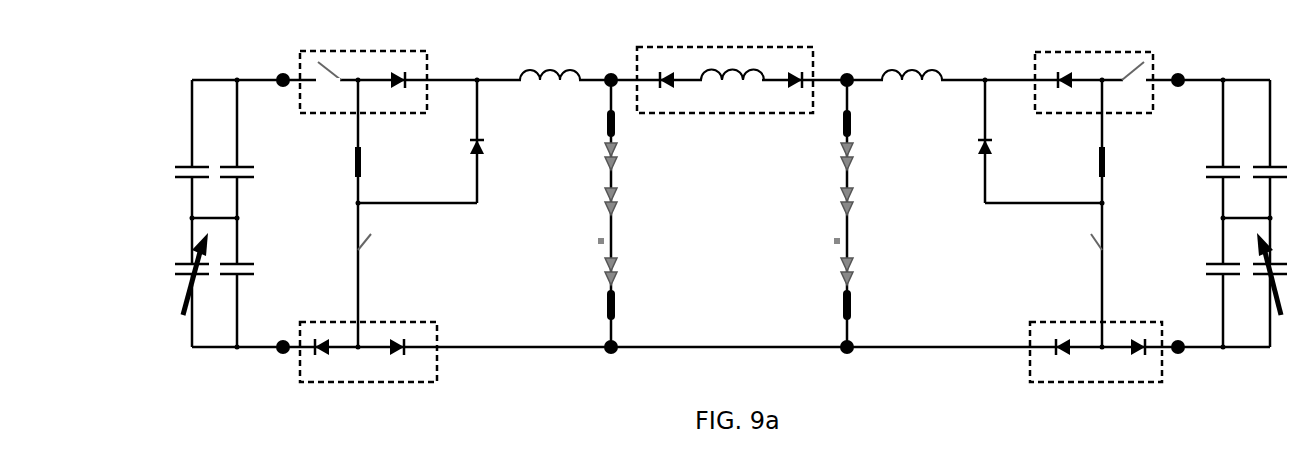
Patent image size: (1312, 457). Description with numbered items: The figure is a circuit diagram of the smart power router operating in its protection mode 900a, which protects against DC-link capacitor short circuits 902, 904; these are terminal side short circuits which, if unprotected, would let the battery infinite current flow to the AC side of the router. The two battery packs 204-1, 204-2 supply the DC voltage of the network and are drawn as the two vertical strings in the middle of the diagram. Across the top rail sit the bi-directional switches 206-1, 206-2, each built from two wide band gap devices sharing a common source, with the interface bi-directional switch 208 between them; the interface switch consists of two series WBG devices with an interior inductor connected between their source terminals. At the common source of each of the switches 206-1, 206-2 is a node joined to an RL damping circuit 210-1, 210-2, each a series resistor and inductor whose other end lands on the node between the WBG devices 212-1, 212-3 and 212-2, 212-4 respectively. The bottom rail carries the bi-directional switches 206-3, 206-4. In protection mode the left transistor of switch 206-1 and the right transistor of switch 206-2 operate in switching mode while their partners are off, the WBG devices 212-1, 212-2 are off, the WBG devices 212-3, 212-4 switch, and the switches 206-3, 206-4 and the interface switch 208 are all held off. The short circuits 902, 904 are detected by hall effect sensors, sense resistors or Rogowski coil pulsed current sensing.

The power router protection mode 900a is at (170, 122).
The bi-directional switch 206-1 is at (300, 83).
The bi-directional switch 206-2 is at (1155, 82).
The bi-directional switch 206-3 is at (367, 382).
The bi-directional switch 206-4 is at (1093, 382).
The interface bi-directional switch 208 is at (637, 82).
The RL damping circuit 210-1 is at (348, 157).
The RL damping circuit 210-2 is at (1108, 162).
The WBG device 212-1 is at (483, 152).
The WBG device 212-2 is at (980, 147).
The WBG device 212-3 is at (367, 238).
The WBG device 212-4 is at (1093, 245).
The battery pack 204-1 is at (615, 275).
The battery pack 204-2 is at (842, 272).
The DC-link capacitor short circuit 902 is at (205, 255).
The DC-link capacitor short circuit 904 is at (1253, 255).